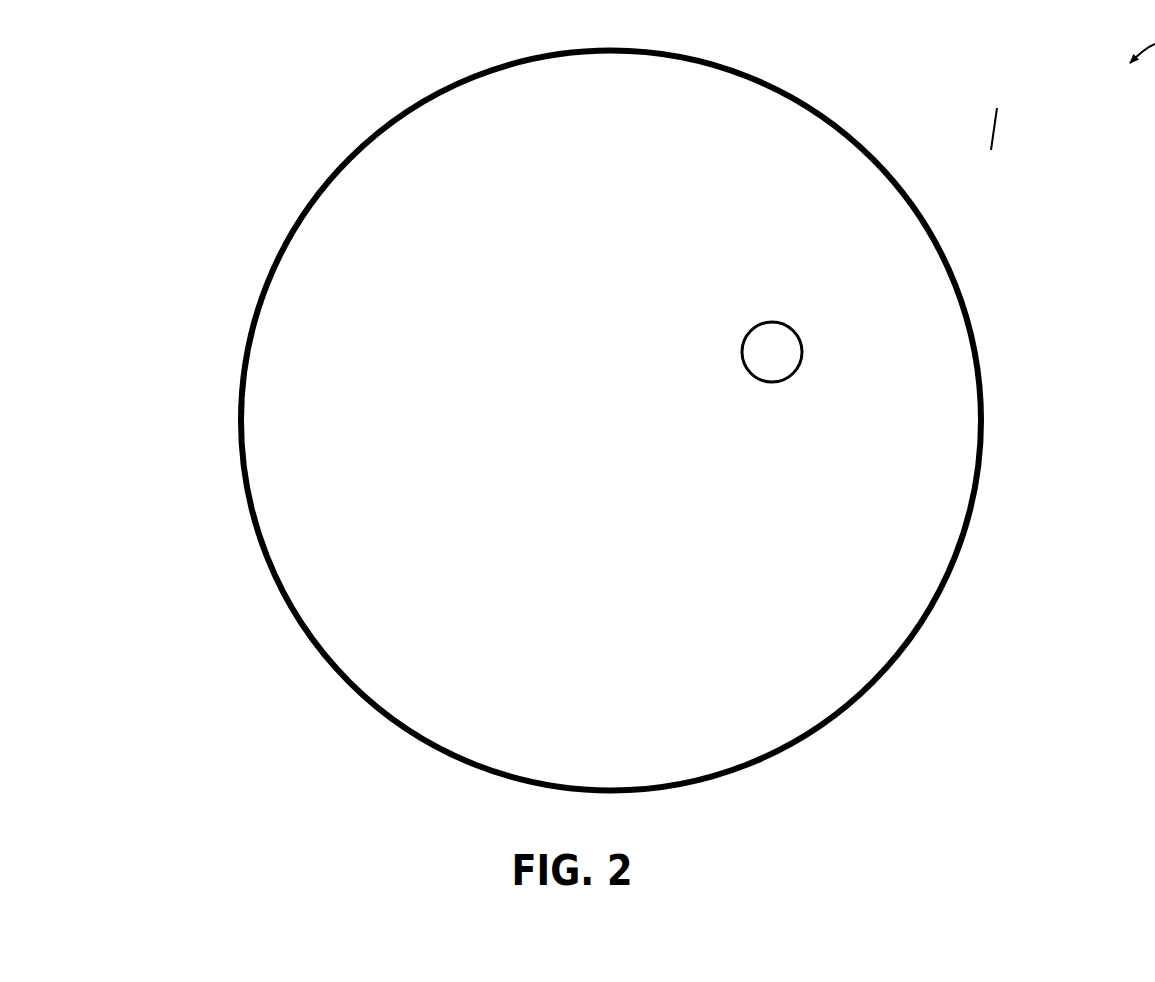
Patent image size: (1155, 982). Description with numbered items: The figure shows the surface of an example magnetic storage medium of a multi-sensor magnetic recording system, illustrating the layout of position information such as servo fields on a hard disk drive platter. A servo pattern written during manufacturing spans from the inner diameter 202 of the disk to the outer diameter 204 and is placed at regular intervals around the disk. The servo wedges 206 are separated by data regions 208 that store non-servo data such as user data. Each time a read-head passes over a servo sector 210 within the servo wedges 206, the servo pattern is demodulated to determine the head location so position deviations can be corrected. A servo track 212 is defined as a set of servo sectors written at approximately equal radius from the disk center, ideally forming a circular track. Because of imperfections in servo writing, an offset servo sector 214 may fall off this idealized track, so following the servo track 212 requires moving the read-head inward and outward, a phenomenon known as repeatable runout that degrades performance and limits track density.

The inner diameter 202 is at (608, 409).
The outer diameter 204 is at (554, 421).
The servo wedges 206 is at (962, 90).
The data regions 208 is at (958, 750).
The servo sector 210 is at (540, 587).
The servo track 212 is at (468, 518).
The offset servo sector 214 is at (803, 352).